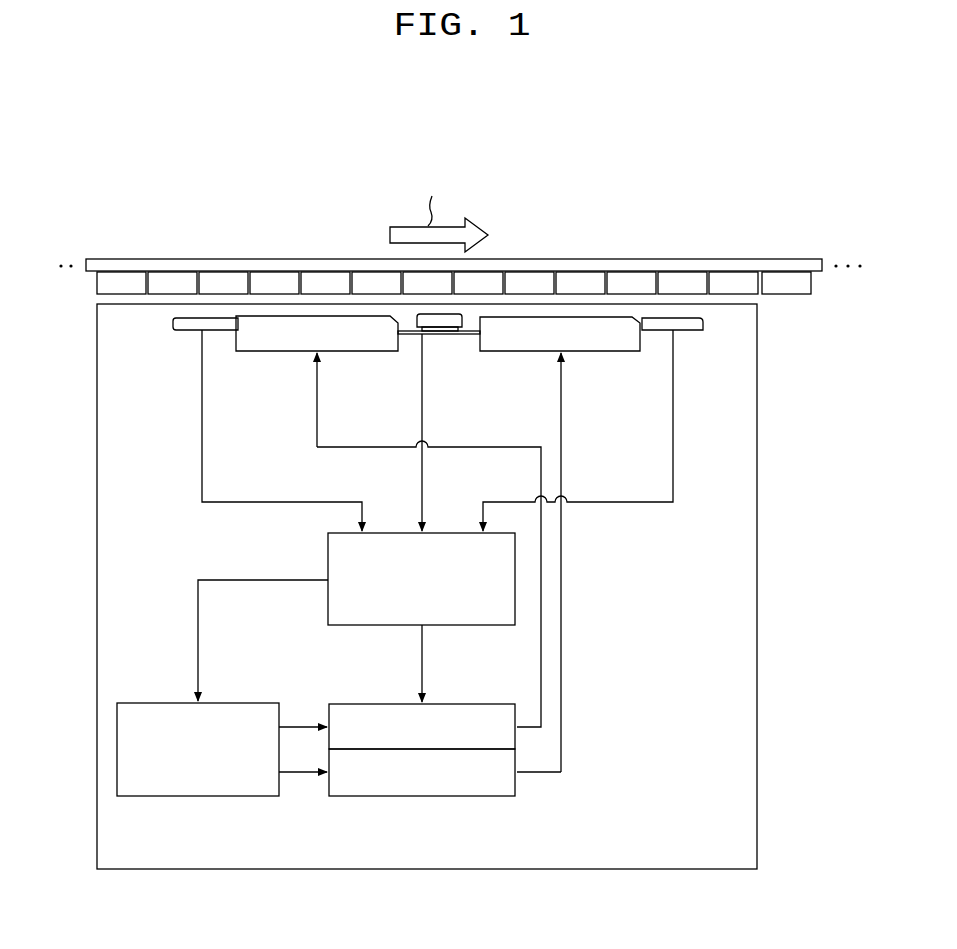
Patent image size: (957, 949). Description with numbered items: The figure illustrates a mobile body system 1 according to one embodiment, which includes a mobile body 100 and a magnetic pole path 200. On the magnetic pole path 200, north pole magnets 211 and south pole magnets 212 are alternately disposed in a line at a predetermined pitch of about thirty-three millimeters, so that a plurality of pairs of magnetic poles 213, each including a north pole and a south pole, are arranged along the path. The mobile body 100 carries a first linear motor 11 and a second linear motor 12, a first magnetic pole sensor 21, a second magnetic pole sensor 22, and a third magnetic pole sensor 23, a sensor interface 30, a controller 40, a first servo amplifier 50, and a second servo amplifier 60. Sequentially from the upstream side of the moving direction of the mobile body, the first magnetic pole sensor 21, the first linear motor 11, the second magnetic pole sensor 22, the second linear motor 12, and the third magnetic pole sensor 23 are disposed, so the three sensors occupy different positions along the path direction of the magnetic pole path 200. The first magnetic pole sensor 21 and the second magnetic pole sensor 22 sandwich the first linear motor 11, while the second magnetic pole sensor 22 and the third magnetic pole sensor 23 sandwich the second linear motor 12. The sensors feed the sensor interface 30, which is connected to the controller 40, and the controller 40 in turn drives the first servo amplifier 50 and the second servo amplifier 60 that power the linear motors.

The mobile body system 1 is at (780, 180).
The magnetic pole path 200 is at (790, 260).
The pair of magnetic poles 213 is at (206, 218).
The north pole magnet 211 is at (117, 270).
The south pole magnet 212 is at (171, 270).
The mobile body 100 is at (758, 432).
The third magnetic pole sensor 23 is at (185, 332).
The second linear motor 12 is at (275, 353).
The second magnetic pole sensor 22 is at (458, 335).
The first linear motor 11 is at (623, 353).
The first magnetic pole sensor 21 is at (697, 333).
The sensor interface 30 is at (327, 548).
The controller 40 is at (140, 702).
The second servo amplifier 60 is at (352, 702).
The first servo amplifier 50 is at (358, 798).